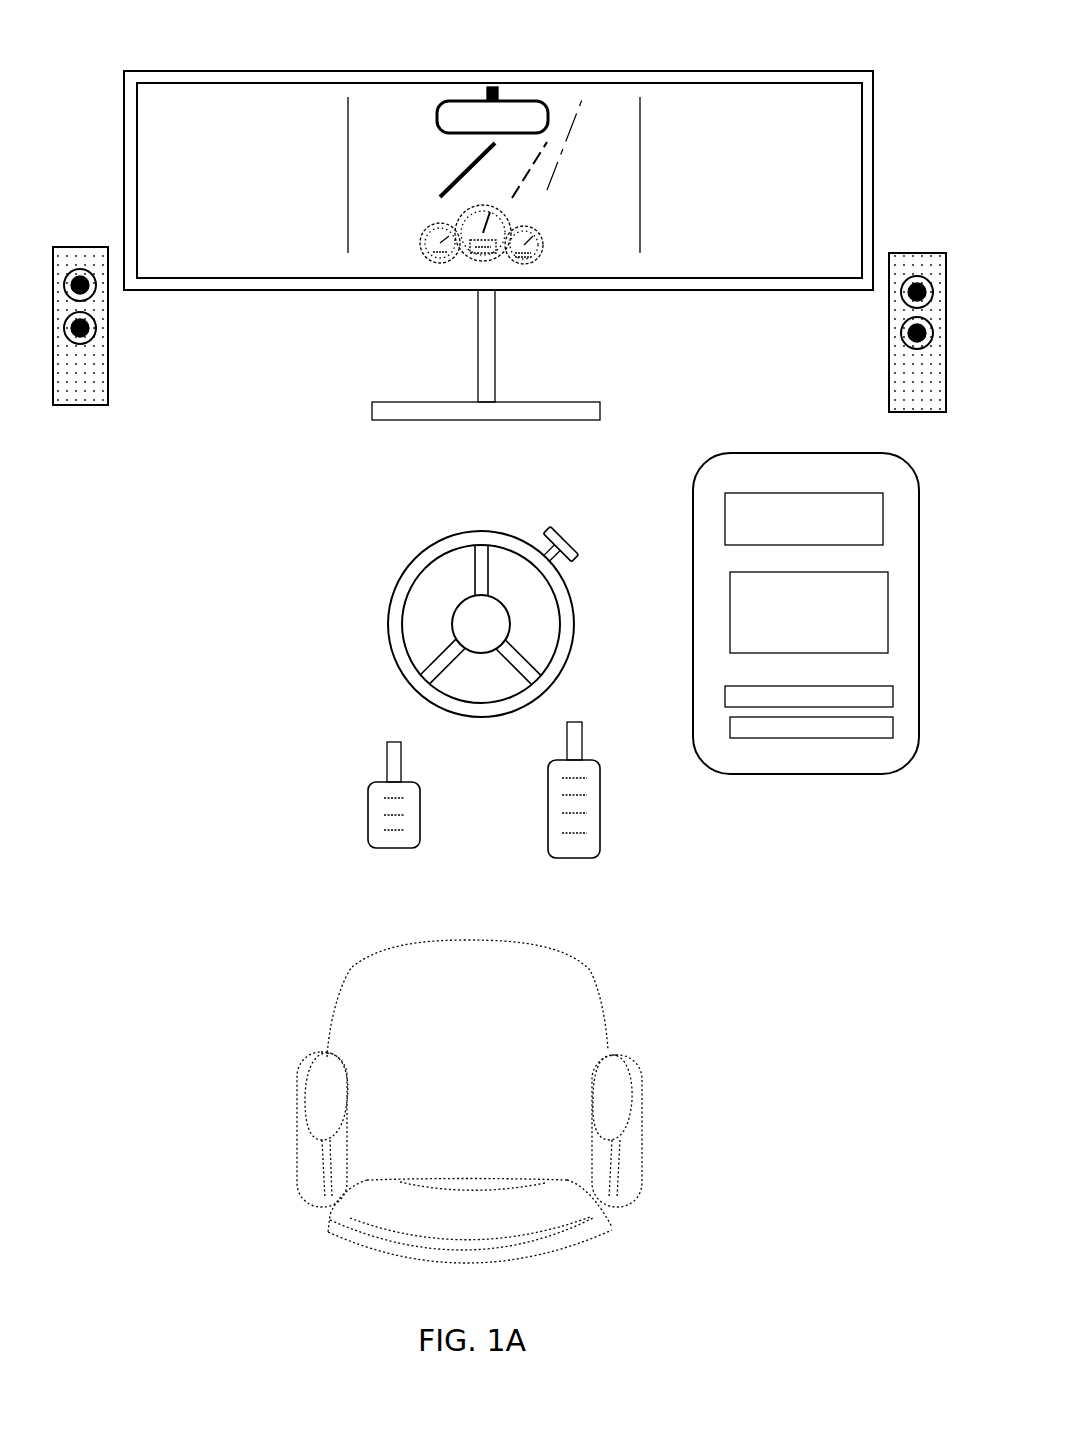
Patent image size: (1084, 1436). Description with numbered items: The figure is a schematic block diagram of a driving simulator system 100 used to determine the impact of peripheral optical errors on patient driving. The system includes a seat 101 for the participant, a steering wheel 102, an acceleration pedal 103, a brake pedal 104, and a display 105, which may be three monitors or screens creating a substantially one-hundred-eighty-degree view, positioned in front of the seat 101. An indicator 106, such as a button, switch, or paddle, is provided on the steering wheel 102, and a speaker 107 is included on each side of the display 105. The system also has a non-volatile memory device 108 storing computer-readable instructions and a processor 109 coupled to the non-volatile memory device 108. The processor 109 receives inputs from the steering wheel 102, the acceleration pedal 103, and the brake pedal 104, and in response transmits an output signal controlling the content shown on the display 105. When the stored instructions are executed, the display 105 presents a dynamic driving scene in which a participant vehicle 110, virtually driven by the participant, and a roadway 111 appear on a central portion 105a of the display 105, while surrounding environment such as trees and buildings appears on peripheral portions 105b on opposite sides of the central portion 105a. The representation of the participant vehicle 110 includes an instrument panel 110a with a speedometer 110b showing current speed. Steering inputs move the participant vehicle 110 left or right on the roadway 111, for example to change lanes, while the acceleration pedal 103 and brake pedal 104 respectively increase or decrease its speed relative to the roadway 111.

The driving simulator system 100 is at (83, 1047).
The seat 101 is at (672, 1070).
The steering wheel 102 is at (431, 585).
The acceleration pedal 103 is at (572, 808).
The brake pedal 104 is at (404, 815).
The display 105 is at (258, 322).
The central portion 105a is at (607, 127).
The peripheral portions 105b is at (496, 175).
The indicator 106 is at (568, 530).
The speaker 107 is at (80, 405).
The non-volatile memory device 108 is at (854, 640).
The processor 109 is at (806, 623).
The participant vehicle 110 is at (413, 108).
The instrument panel 110a is at (486, 294).
The speedometer 110b is at (470, 230).
The roadway 111 is at (545, 187).